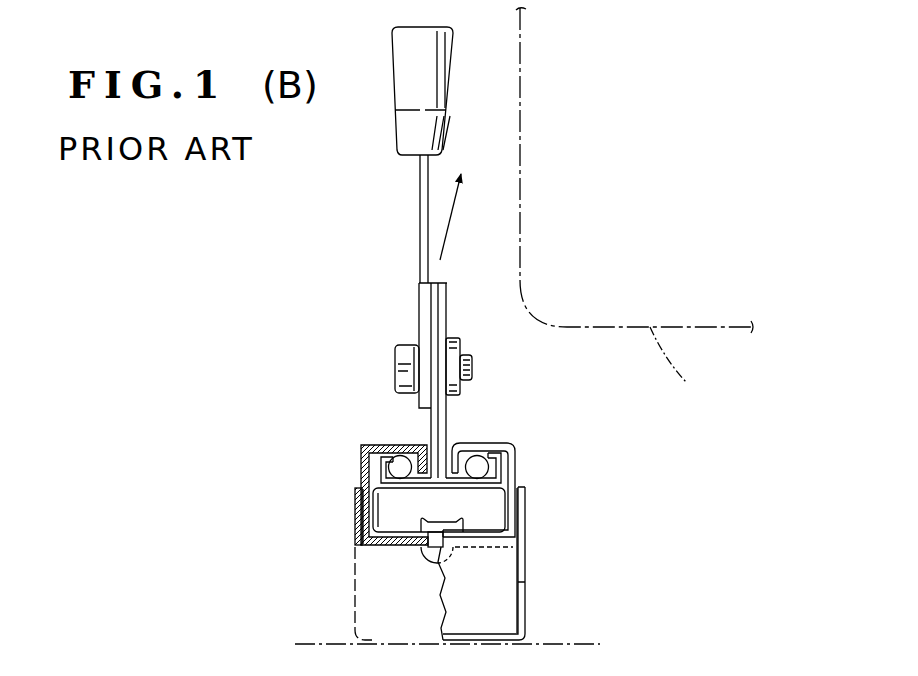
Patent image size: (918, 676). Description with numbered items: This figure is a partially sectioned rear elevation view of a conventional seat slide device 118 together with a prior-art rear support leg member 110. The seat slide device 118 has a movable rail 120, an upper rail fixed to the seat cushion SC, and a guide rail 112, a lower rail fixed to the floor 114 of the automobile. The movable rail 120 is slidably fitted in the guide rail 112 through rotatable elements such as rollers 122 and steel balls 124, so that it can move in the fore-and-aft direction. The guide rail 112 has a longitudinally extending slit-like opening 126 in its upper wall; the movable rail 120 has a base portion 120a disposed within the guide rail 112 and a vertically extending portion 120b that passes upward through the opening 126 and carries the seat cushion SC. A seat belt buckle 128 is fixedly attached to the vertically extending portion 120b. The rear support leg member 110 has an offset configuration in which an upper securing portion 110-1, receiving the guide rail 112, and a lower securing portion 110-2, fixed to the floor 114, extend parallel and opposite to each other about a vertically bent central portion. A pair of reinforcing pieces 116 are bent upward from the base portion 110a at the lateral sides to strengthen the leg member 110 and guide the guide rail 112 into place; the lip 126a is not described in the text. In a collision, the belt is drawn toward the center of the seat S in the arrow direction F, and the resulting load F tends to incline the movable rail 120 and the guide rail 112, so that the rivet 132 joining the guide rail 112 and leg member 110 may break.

The seat S is at (676, 140).
The seat cushion SC is at (687, 370).
The arrow direction of input load F is at (458, 196).
The rear support leg member 110 is at (441, 555).
The upper securing portion 110-1 is at (347, 514).
The lower securing portion 110-2 is at (528, 616).
The base portion 110a is at (390, 548).
The guide rail 112 is at (479, 471).
The floor 114 is at (582, 640).
The reinforcing pieces 116 is at (356, 497).
The seat slide device 118 is at (512, 440).
The movable rail 120 is at (424, 316).
The base portion of movable rail 120a is at (497, 474).
The vertically extending portion 120b is at (450, 296).
The rollers 122 is at (383, 524).
The steel balls 124 is at (392, 466).
The slit-like opening 126 is at (452, 456).
The roller holder arm 126a is at (423, 450).
The seat belt buckle 128 is at (453, 78).
The rivet 132 is at (428, 565).